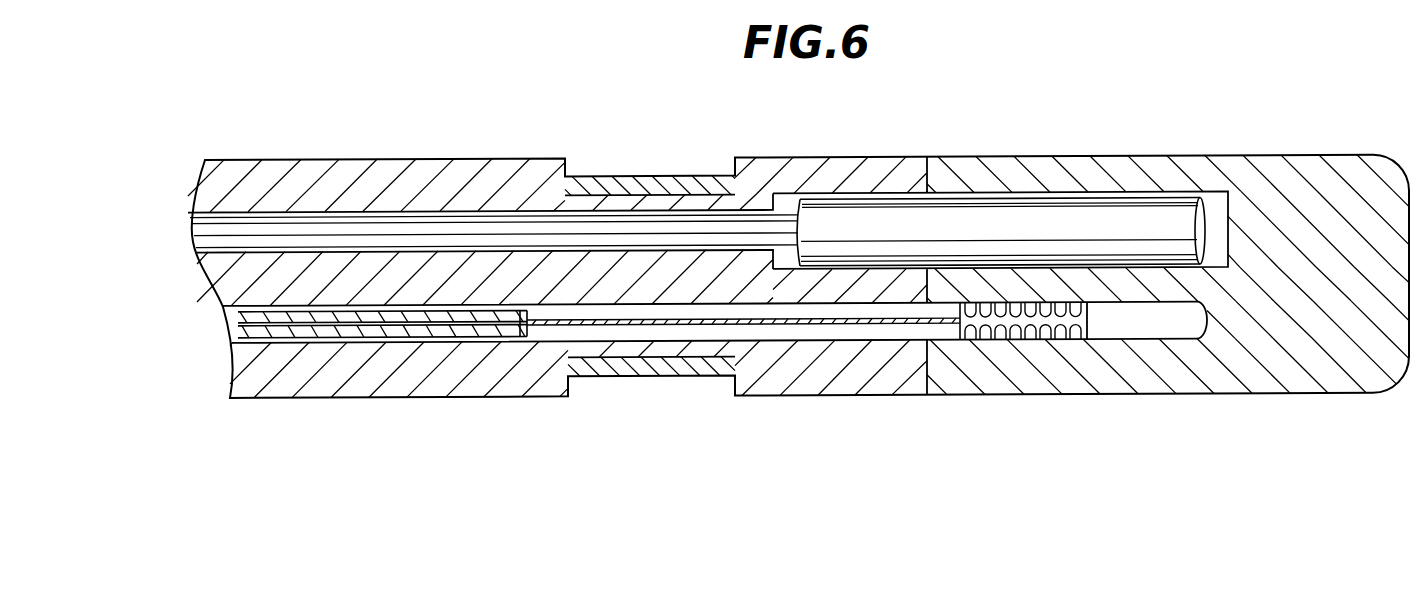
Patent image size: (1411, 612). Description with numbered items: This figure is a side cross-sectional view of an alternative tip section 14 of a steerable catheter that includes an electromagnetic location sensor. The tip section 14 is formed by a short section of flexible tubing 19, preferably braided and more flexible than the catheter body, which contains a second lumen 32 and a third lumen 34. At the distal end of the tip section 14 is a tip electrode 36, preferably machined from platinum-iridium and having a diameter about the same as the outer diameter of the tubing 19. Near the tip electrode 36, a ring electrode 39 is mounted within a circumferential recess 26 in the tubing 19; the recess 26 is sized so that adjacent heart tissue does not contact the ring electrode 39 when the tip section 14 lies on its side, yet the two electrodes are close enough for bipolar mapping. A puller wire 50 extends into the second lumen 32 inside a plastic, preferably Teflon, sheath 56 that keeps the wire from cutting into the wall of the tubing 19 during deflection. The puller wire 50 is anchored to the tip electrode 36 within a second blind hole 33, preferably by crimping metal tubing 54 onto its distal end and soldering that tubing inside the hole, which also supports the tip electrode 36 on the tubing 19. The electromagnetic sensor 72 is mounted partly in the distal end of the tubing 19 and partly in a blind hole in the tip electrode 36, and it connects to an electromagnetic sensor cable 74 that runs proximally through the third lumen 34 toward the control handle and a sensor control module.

The tip section 14 is at (385, 458).
The tubing 19 is at (408, 191).
The circumferential recess 26 is at (570, 178).
The second lumen 32 is at (547, 334).
The second blind hole 33 is at (1155, 326).
The third lumen 34 is at (335, 212).
The tip electrode 36 is at (1250, 188).
The ring electrode 39 is at (632, 372).
The puller wire 50 is at (862, 325).
The metal tubing 54 is at (1027, 325).
The sheath 56 is at (288, 334).
The electromagnetic sensor 72 is at (983, 234).
The electromagnetic sensor cable 74 is at (215, 232).